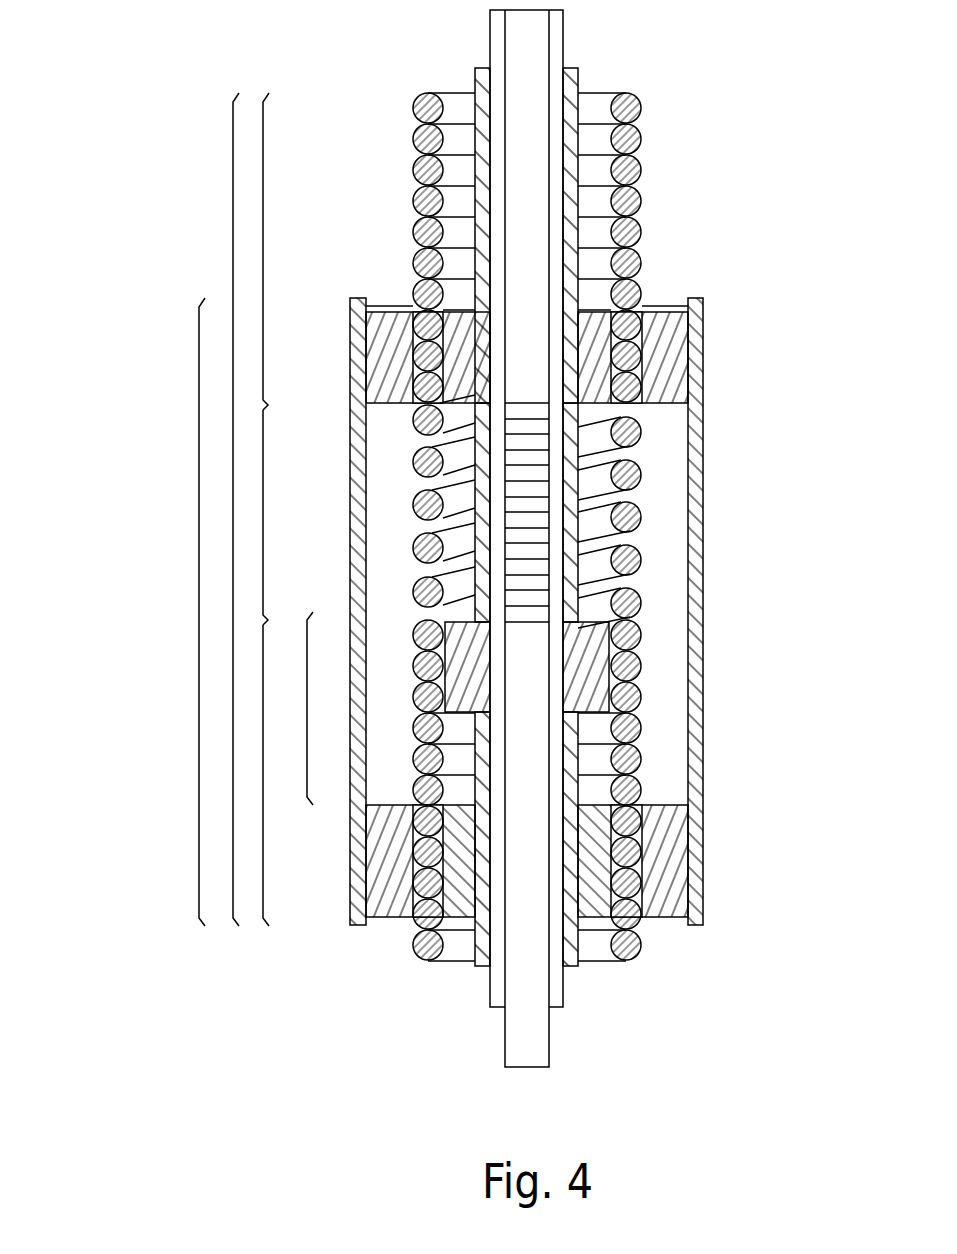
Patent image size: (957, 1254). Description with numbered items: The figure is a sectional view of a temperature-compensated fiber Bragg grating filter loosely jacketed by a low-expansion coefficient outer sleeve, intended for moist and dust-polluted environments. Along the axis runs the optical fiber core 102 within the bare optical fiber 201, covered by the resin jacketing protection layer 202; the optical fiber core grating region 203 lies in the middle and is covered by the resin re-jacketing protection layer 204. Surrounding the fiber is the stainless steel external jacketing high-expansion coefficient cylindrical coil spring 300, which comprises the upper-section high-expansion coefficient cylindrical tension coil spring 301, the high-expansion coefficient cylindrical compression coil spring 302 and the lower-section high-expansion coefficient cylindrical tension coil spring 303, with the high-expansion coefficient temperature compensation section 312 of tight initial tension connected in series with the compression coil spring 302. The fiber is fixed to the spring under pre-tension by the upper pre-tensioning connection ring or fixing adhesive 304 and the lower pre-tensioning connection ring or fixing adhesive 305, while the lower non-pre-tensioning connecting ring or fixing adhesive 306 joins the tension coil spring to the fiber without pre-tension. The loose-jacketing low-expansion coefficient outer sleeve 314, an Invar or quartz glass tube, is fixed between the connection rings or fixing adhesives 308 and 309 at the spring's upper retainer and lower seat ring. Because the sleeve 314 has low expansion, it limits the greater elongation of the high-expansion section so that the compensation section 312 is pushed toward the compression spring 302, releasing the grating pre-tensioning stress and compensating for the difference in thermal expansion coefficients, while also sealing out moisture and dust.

The optical fiber core 102 is at (516, 141).
The bare optical fiber 201 is at (489, 34).
The resin jacketing protection layer 202 is at (581, 248).
The optical fiber core grating region 203 is at (521, 443).
The resin re-jacketing protection layer 204 is at (583, 487).
The external jacketing high-expansion coefficient cylindrical coil spring 300 is at (232, 280).
The upper-section high-expansion coefficient cylindrical tension coil spring 301 is at (262, 227).
The high-expansion coefficient cylindrical compression coil spring 302 is at (262, 527).
The lower-section high-expansion coefficient cylindrical tension coil spring 303 is at (262, 806).
The upper pre-tensioning connection ring or fixing adhesive 304 is at (577, 341).
The lower pre-tensioning connection ring or fixing adhesive 305 is at (574, 653).
The lower non-pre-tensioning connecting ring or fixing adhesive 306 is at (584, 868).
The connection ring or fixing adhesive 308 is at (656, 370).
The connection ring or fixing adhesive 309 is at (654, 835).
The high-expansion coefficient temperature compensation section 312 is at (306, 713).
The loose-jacketing low-expansion coefficient outer sleeve 314 is at (349, 538).